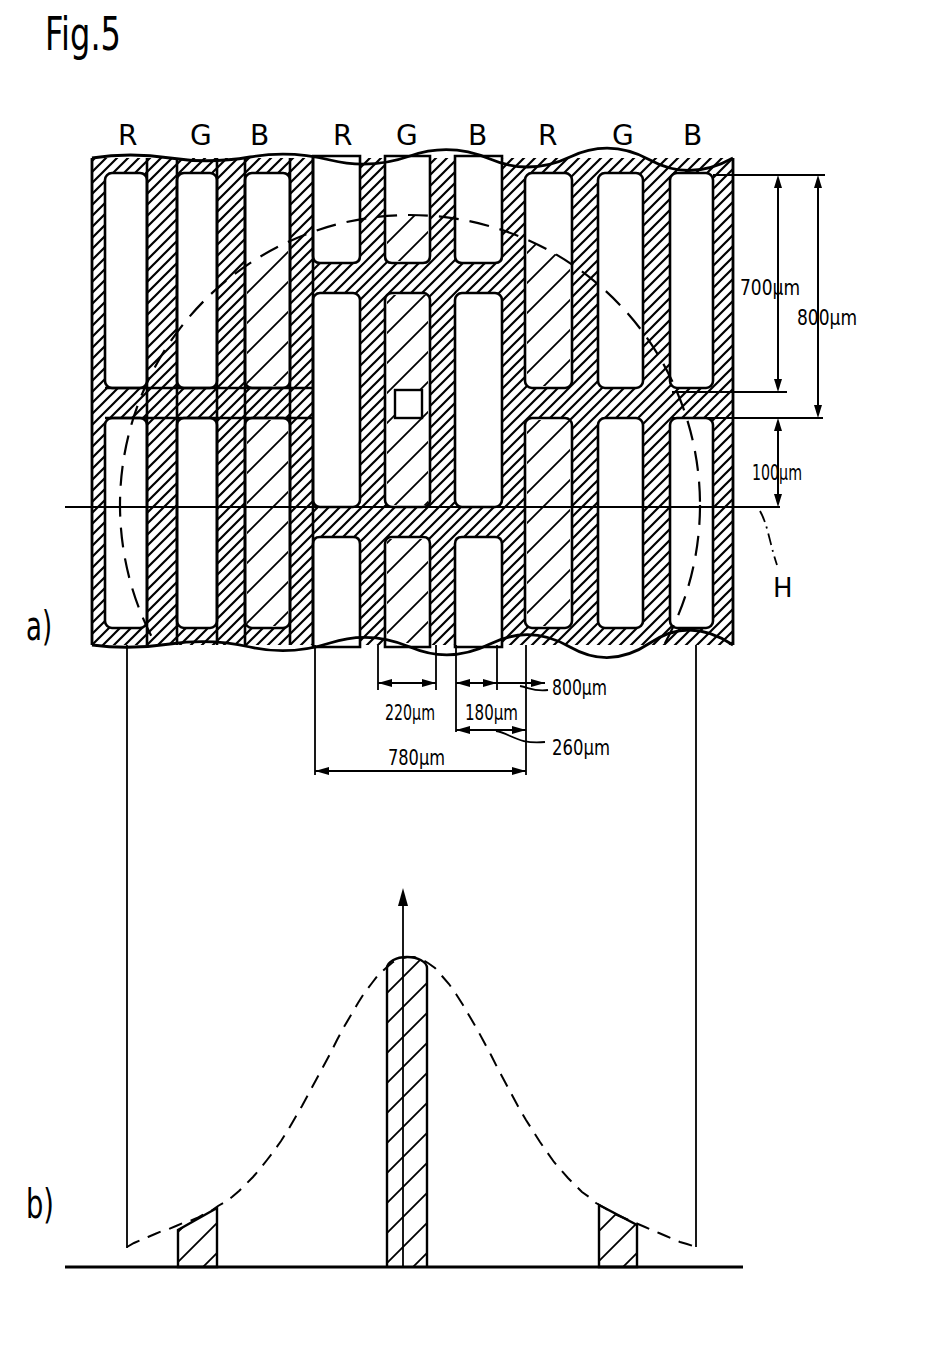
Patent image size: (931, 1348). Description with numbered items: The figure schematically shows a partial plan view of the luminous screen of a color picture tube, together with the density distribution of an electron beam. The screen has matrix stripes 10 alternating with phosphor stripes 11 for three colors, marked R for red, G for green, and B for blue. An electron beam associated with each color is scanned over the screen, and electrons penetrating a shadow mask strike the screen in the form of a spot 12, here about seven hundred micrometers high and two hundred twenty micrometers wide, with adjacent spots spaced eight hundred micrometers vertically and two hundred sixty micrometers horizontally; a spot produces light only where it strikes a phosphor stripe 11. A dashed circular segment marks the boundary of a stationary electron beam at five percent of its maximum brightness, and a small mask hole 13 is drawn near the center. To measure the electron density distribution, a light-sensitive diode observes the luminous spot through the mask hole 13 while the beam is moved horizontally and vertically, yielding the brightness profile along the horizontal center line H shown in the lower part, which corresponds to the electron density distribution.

The matrix stripes 10 is at (290, 157).
The phosphor stripes 11 is at (683, 165).
The spot 12 is at (128, 393).
The mask hole 13 is at (422, 402).